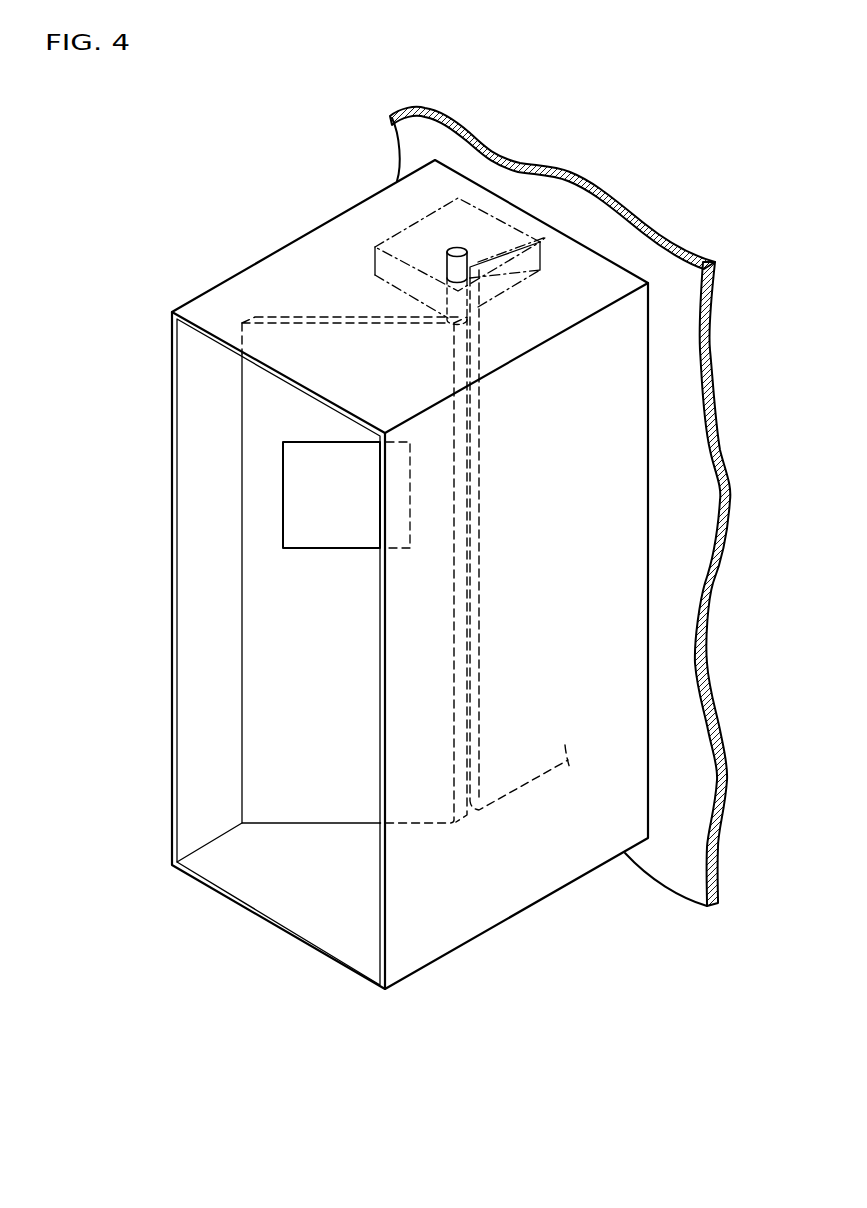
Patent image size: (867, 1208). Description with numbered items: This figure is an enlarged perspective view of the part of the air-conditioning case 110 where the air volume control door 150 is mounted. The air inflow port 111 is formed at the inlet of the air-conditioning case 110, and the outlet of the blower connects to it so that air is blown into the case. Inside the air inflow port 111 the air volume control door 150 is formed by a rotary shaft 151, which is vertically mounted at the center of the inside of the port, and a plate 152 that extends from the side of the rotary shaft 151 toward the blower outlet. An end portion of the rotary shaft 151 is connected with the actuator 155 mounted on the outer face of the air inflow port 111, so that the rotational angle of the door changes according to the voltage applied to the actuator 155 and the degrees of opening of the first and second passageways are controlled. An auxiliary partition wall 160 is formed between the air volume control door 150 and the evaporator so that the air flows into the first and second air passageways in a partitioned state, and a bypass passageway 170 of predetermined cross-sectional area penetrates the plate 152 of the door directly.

The air-conditioning case 110 is at (675, 320).
The air inflow port 111 is at (427, 967).
The air volume control door 150 is at (212, 145).
The rotary shaft 151 is at (412, 223).
The plate 152 is at (283, 318).
The actuator 155 is at (451, 249).
The auxiliary partition wall 160 is at (524, 784).
The bypass passageway 170 is at (283, 486).